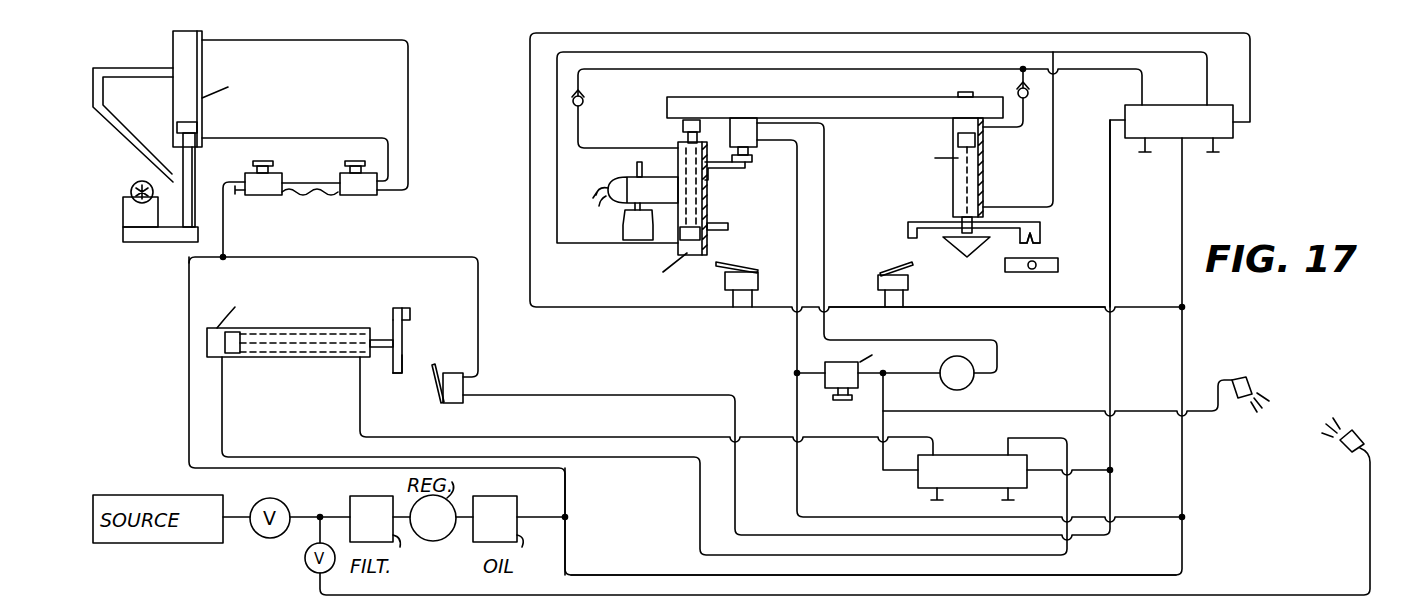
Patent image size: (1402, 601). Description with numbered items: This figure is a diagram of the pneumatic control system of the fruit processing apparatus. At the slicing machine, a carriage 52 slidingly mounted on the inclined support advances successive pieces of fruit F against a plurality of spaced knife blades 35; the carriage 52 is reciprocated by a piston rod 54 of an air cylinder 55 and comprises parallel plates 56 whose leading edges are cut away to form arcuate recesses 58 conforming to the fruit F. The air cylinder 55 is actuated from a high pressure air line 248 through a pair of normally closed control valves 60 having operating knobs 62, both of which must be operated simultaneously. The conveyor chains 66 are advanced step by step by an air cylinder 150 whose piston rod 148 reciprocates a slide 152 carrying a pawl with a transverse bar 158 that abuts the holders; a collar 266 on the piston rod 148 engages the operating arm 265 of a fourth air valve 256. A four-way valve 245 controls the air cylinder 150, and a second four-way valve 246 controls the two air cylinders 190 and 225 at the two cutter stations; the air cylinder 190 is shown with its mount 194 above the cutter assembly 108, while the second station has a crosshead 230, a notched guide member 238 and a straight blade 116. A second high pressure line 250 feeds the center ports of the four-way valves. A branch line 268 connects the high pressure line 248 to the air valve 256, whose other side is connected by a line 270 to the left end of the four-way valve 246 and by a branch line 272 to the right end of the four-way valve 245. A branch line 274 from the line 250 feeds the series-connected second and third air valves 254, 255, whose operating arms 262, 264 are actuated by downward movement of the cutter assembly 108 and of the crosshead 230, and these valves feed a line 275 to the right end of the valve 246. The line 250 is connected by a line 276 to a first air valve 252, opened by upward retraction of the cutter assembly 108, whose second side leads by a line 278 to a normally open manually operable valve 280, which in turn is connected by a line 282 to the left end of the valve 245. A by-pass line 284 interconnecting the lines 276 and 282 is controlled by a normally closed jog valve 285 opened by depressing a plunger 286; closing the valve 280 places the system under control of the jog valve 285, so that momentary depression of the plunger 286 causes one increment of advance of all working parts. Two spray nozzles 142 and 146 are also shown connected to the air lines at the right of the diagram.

The air cylinder 55 is at (187, 52).
The knife blades 35 is at (128, 135).
The piston rod 54 is at (195, 163).
The fruit F is at (130, 190).
The arcuate recesses 58 is at (115, 176).
The parallel plates 56 is at (131, 205).
The carriage 52 is at (157, 233).
The control valves 60 is at (257, 188).
The operating knobs 62 is at (348, 159).
The branch line 268 is at (482, 338).
The high pressure air line 248 is at (189, 370).
The air cylinder 150 is at (320, 355).
The slide 152 is at (402, 323).
The transverse bar 158 is at (408, 310).
The collar 266 is at (402, 367).
The piston rod 148 is at (393, 358).
The fourth air valve 256 is at (453, 395).
The operating arm 265 is at (433, 380).
The line 275 is at (530, 186).
The cutter cylinder mount 194 is at (690, 135).
The air cylinder 190 is at (702, 210).
The cutter assembly 108 is at (618, 230).
The first air valve 252 is at (743, 120).
The line 278 is at (828, 238).
The line 276 is at (797, 382).
The second air valve 254 is at (745, 290).
The operating arm 262 is at (723, 263).
The third air valve 255 is at (878, 277).
The operating arm 264 is at (911, 265).
The air cylinder 225 is at (983, 173).
The straight blade 116 is at (970, 257).
The crosshead 230 is at (927, 222).
The index notch 238 is at (1040, 234).
The conveyor chains 66 is at (1050, 279).
The line 270 is at (1112, 223).
The branch line 274 is at (1065, 309).
The four-way valve 246 is at (1200, 90).
The jog valve 285 is at (840, 362).
The plunger 286 is at (835, 400).
The control line 284 is at (817, 377).
The line 282 is at (885, 395).
The manually operable valve 280 is at (975, 382).
The four-way valve 245 is at (953, 458).
The branch line 272 is at (1085, 473).
The spray nozzle 142 is at (1250, 381).
The spray nozzle 146 is at (1347, 447).
The high pressure line 250 is at (1188, 577).